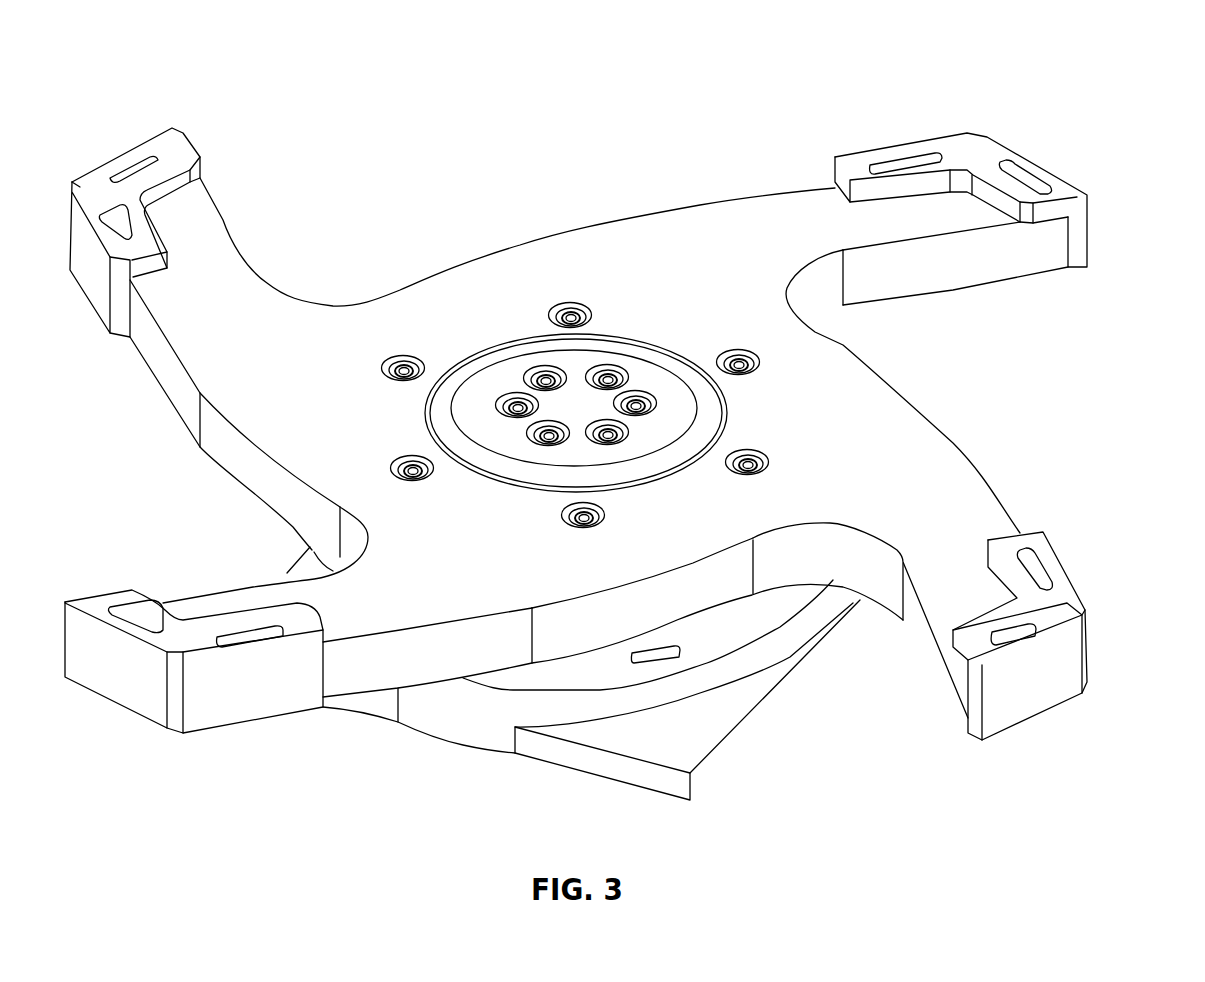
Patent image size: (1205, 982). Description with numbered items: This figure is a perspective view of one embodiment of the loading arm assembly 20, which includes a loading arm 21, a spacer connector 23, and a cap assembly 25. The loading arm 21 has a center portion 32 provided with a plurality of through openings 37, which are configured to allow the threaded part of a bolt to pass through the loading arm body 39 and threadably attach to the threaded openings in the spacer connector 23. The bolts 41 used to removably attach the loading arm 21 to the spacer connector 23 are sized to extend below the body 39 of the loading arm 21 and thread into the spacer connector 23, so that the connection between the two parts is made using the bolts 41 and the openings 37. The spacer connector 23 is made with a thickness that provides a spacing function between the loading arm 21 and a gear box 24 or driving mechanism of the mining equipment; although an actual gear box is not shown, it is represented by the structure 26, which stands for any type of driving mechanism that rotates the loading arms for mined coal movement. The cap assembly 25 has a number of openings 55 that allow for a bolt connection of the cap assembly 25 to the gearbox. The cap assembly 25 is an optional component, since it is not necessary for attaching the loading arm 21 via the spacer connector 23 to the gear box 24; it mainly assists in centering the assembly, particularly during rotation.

The loading arm assembly 20 is at (1098, 62).
The loading arm 21 is at (228, 283).
The spacer connector 23 is at (742, 615).
The gear box 24 is at (1068, 572).
The cap assembly 25 is at (500, 373).
The structure representing gear box 26 is at (720, 755).
The center portion 32 is at (595, 251).
The through openings 37 is at (778, 452).
The loading arm body 39 is at (410, 672).
The bolts 41 is at (765, 360).
The openings 55 is at (650, 400).